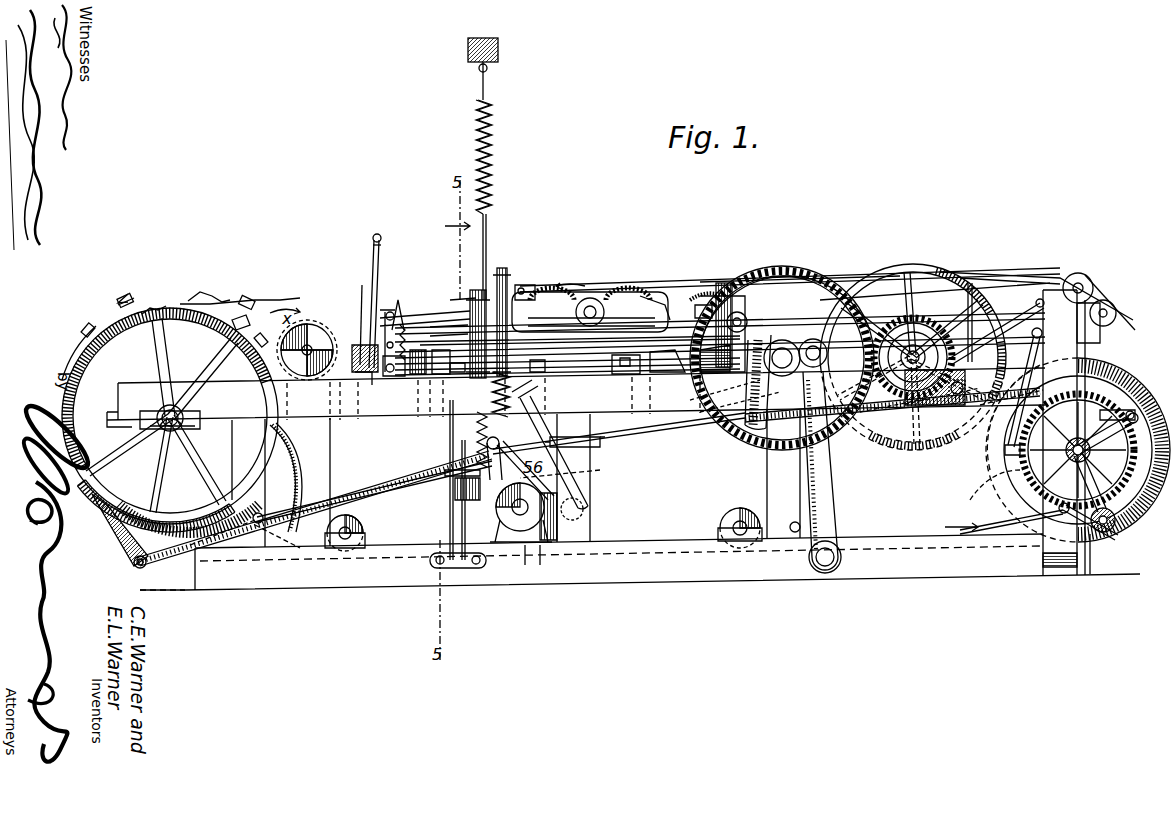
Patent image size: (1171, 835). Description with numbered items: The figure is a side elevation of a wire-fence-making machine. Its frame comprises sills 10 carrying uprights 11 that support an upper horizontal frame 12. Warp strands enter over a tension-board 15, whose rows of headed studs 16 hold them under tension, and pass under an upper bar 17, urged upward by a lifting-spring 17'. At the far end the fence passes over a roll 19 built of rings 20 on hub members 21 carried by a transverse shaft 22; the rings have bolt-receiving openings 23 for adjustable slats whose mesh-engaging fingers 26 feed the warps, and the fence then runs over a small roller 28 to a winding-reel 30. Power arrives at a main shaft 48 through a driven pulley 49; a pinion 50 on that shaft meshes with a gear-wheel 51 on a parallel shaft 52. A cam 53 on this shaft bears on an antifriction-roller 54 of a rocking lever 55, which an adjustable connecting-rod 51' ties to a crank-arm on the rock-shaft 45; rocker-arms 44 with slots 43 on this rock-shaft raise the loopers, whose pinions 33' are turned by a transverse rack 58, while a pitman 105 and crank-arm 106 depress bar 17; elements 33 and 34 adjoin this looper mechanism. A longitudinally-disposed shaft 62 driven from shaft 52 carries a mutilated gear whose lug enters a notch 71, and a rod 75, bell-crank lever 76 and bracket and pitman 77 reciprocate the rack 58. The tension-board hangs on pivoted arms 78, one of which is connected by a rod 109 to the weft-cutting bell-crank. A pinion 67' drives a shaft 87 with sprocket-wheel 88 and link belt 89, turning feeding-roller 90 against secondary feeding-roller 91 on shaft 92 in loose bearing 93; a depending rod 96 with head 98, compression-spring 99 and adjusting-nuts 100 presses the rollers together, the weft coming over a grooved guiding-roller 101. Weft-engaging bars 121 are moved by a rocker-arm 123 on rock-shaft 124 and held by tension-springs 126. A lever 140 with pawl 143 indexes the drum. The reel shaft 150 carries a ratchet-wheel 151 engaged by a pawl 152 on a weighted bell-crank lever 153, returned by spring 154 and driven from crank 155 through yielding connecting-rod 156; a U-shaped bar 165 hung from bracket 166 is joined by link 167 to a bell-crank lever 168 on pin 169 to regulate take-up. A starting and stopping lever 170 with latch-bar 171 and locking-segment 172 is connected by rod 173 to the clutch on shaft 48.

The sills 10 is at (609, 572).
The uprights 11 is at (266, 503).
The upper horizontal frame 12 is at (362, 428).
The tension-board 15 is at (985, 277).
The headed studs or pins 16 is at (976, 276).
The upper bar 17 is at (595, 478).
The lifting-spring 17' is at (503, 169).
The barrel or roll 19 is at (118, 324).
The rings 20 is at (128, 332).
The hub members 21 is at (182, 462).
The transverse shaft 22 is at (185, 419).
The bolt-receiving openings 23 is at (150, 314).
The mesh-engaging fingers 26 is at (249, 324).
The small roller 28 is at (318, 324).
The reel 30 is at (1001, 492).
The spring 33 is at (472, 439).
The pinions 33' is at (573, 467).
The spring 34 is at (490, 389).
The slots 43 is at (500, 521).
The rocker-arms 44 is at (492, 575).
The rock-shaft 45 is at (576, 500).
The main shaft 48 is at (896, 320).
The driven pulley 49 is at (940, 262).
The pinion 50 is at (903, 262).
The gear-wheel 51 is at (785, 300).
The adjustable connecting-rod 51' is at (667, 439).
The shaft 52 is at (782, 358).
The cam 53 is at (773, 268).
The antifriction-roller 54 is at (813, 364).
The rocking lever 55 is at (822, 472).
The rack 58 is at (460, 490).
The longitudinally-disposed shaft 62 is at (595, 368).
The pinion 67' is at (707, 371).
The notch 71 is at (341, 504).
The rod 75 is at (449, 441).
The bell-crank lever 76 is at (448, 530).
The bracket 77 is at (462, 500).
The vertically-disposed arms 78 is at (985, 322).
The longitudinally-disposed shaft 87 is at (647, 365).
The sprocket-wheel 88 is at (670, 365).
The link belt 89 is at (700, 290).
The feeding-roller 90 is at (448, 385).
The secondary feeding-roller 91 is at (470, 297).
The shaft 92 is at (660, 284).
The loose bearing 93 is at (718, 285).
The depending rod 96 is at (506, 280).
The head or washer 98 is at (524, 418).
The helical compression-spring 99 is at (518, 402).
The adjusting-nuts 100 is at (527, 289).
The grooved guiding-roller 101 is at (475, 300).
The pitman 105 is at (604, 444).
The crank-arm 106 is at (545, 566).
The rod 109 is at (610, 298).
The weft-engaging bars 121 is at (416, 325).
The rocker-arm 123 is at (386, 318).
The rock-shaft 124 is at (412, 383).
The coiled tension-springs 126 is at (362, 386).
The lever 140 is at (158, 488).
The pawl 143 is at (212, 310).
The shaft 150 is at (1150, 455).
The ratchet-wheel 151 is at (1120, 492).
The pawl 152 is at (1122, 404).
The weighted bell-crank lever 153 is at (1115, 530).
The spring 154 is at (1076, 442).
The crank 155 is at (768, 436).
The yielding connecting-rod 156 is at (902, 414).
The U-shaped bar 165 is at (981, 486).
The bracket 166 is at (1040, 335).
The link 167 is at (1036, 420).
The bell-crank lever 168 is at (1098, 512).
The pin 169 is at (1052, 524).
The starting and stopping lever 170 is at (368, 251).
The latch-bar 171 is at (360, 320).
The locking-segment 172 is at (362, 343).
The rod 173 is at (393, 330).